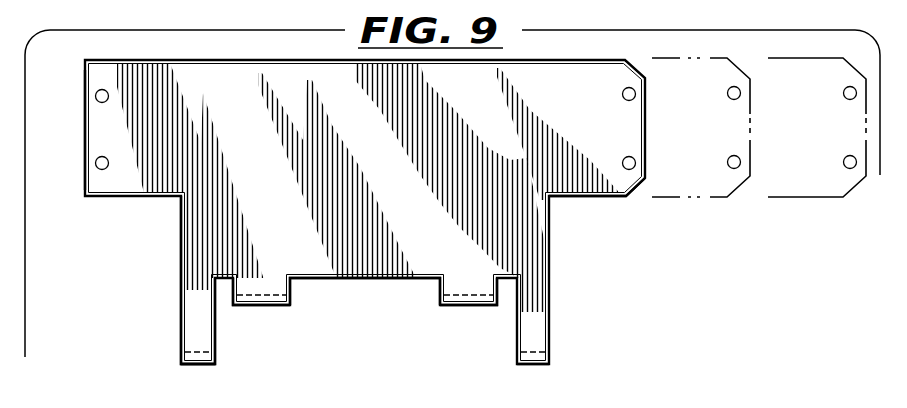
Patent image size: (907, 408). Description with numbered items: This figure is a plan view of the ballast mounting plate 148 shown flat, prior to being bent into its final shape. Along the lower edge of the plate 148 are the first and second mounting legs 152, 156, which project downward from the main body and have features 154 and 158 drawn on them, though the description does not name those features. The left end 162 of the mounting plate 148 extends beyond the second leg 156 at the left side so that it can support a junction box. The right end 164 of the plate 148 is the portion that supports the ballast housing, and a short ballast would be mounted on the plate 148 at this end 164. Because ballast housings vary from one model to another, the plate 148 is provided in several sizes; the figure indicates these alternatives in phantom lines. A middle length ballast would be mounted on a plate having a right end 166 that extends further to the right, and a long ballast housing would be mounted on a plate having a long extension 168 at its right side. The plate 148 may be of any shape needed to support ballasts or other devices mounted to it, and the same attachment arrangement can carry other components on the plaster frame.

The ballast mounting plate 148 is at (182, 188).
The first mounting leg 152 is at (297, 284).
The notches 154 is at (253, 305).
The second mounting leg 156 is at (181, 307).
The leg ends 158 is at (217, 366).
The left end 162 is at (85, 127).
The right end 164 is at (577, 197).
The right end (middle-length plate) 166 is at (680, 198).
The long extension 168 is at (785, 198).